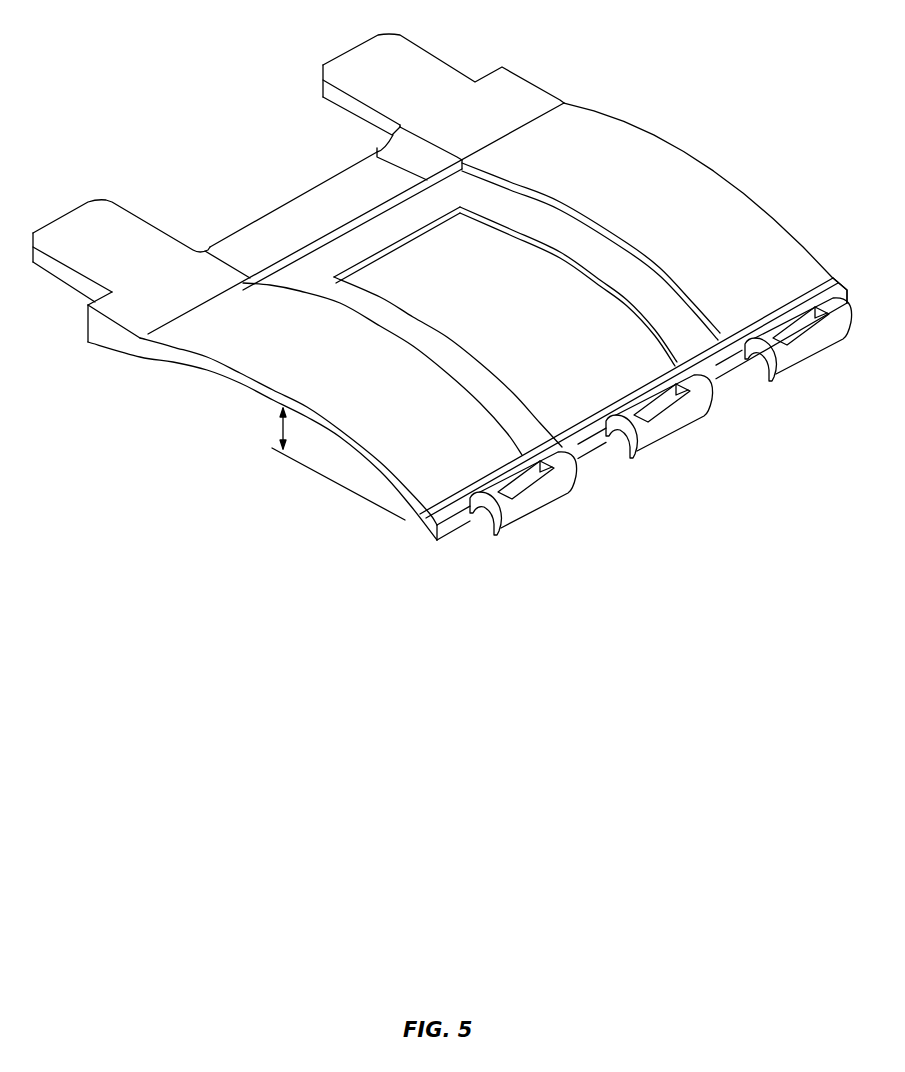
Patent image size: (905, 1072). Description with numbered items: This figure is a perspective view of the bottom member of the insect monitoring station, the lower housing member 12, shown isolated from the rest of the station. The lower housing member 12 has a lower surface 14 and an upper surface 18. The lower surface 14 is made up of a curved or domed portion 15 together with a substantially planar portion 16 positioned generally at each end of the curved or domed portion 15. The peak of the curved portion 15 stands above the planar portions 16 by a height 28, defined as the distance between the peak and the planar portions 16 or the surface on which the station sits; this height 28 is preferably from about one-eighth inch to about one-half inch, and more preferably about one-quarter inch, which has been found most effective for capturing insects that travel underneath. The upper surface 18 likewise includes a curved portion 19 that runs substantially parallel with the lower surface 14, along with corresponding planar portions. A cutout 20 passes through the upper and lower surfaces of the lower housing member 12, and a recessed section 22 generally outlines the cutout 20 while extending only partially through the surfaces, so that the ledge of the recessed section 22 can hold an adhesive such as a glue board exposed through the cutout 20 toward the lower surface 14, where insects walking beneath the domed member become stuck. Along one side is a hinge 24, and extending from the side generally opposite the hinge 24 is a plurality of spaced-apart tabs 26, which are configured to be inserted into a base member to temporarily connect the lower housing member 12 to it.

The lower housing member 12 is at (730, 140).
The lower surface 14 is at (177, 367).
The curved or domed portion 15 is at (140, 358).
The planar portion 16 is at (100, 345).
The upper surface 18 is at (642, 143).
The curved portion 19 is at (735, 205).
The cutout 20 is at (385, 257).
The recessed section 22 is at (445, 205).
The hinge 24 is at (675, 425).
The tabs 26 is at (373, 60).
The height 28 is at (280, 437).